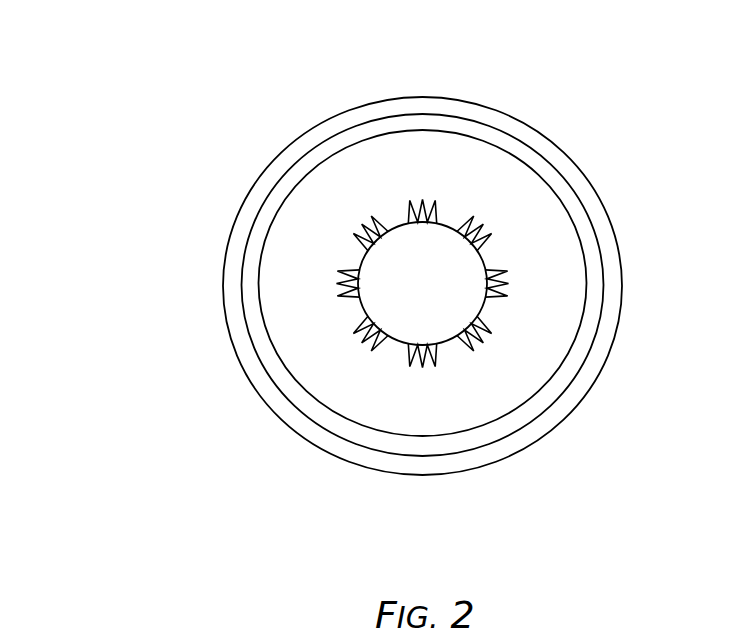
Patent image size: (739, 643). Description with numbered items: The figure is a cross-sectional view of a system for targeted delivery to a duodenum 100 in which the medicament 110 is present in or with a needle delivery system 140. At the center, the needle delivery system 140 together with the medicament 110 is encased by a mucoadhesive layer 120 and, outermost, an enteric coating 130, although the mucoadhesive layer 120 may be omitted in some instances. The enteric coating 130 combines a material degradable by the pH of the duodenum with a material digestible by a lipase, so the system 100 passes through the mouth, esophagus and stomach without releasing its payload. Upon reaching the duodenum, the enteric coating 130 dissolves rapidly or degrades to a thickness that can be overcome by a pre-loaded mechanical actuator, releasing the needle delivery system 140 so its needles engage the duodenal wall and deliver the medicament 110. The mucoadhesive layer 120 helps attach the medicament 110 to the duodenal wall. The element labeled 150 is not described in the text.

The system for targeted delivery to a duodenum 100 is at (132, 77).
The medicament 110 is at (415, 320).
The mucoadhesive layer 120 is at (585, 328).
The enteric coating 130 is at (602, 225).
The needle delivery system 140 is at (455, 210).
The protrusion group 150 is at (352, 268).